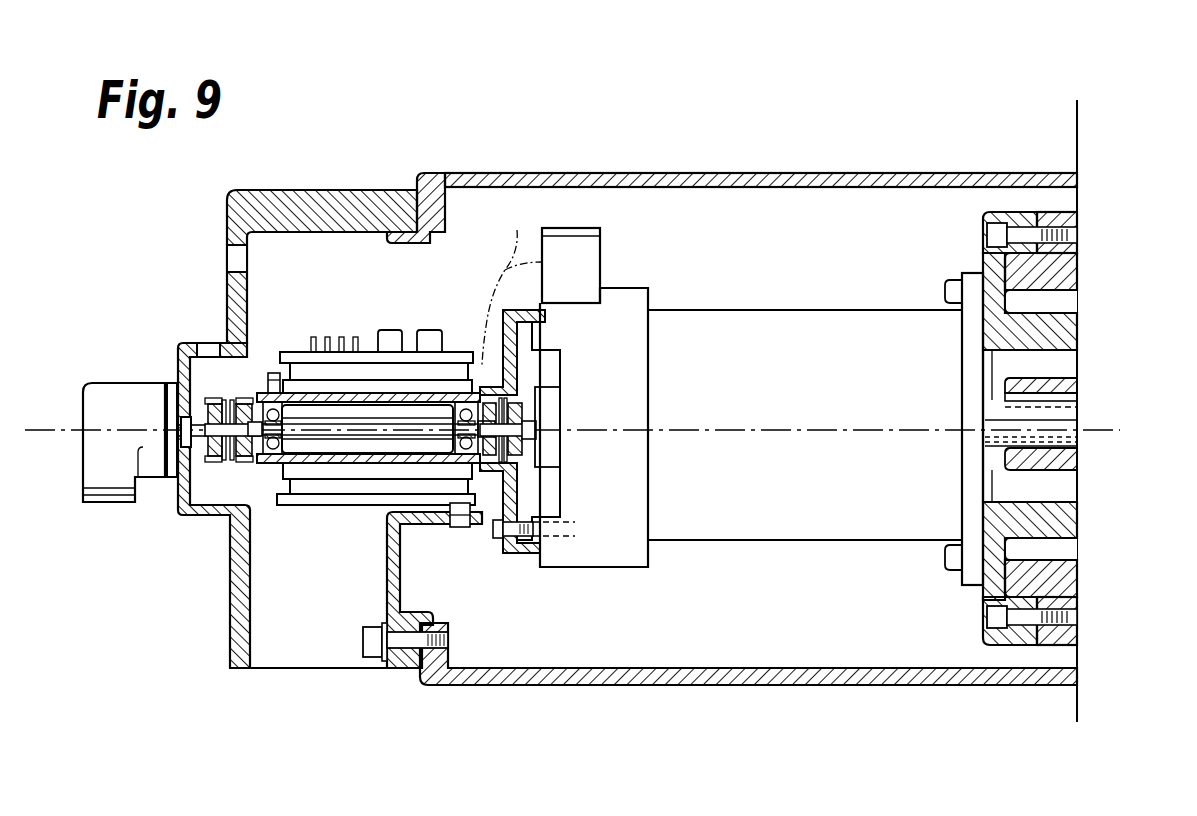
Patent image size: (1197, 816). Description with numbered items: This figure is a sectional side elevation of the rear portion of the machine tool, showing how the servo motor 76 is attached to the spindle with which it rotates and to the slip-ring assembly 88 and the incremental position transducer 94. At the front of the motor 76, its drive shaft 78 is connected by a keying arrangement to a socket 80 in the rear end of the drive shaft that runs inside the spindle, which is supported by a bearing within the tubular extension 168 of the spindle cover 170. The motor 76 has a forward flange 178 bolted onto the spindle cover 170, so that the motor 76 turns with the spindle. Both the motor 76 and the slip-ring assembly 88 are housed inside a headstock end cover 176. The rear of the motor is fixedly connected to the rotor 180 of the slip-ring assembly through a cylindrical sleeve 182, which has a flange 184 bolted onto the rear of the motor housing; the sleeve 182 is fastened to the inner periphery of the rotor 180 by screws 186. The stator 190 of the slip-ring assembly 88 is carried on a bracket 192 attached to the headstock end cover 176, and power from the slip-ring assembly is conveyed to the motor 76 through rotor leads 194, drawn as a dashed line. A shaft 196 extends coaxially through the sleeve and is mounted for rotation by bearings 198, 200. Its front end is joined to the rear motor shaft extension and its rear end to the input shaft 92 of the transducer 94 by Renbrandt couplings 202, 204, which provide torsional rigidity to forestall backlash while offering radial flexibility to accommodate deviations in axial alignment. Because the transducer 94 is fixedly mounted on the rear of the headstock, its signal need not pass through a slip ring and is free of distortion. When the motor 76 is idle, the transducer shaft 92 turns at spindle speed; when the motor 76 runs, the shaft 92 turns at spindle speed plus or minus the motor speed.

The servo motor 76 is at (786, 379).
The drive shaft 78 is at (1060, 410).
The socket 80 is at (1052, 440).
The slip-ring assembly 88 is at (404, 330).
The input shaft 92 is at (204, 440).
The incremental position transducer 94 is at (100, 453).
The tubular extension 168 is at (1060, 332).
The spindle cover 170 is at (985, 258).
The headstock end cover 176 is at (866, 178).
The forward flange 178 is at (968, 355).
The rotor 180 is at (343, 470).
The cylindrical sleeve 182 is at (378, 457).
The flange 184 is at (545, 318).
The screws 186 is at (270, 395).
The stator 190 is at (462, 352).
The bracket 192 is at (390, 598).
The rotor leads 194 is at (560, 392).
The shaft 196 is at (318, 433).
The bearing 198 is at (465, 450).
The bearing 200 is at (273, 458).
The Renbrandt coupling 202 is at (512, 396).
The Renbrandt coupling 204 is at (203, 395).